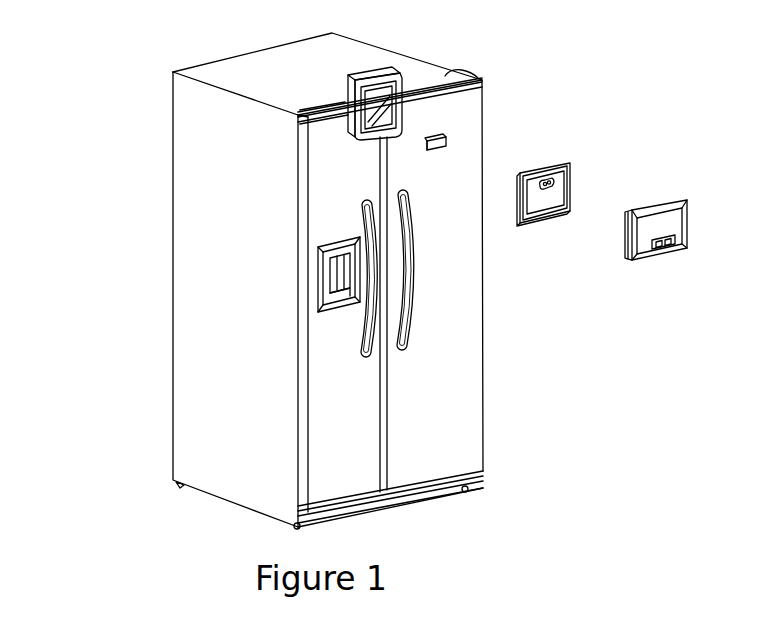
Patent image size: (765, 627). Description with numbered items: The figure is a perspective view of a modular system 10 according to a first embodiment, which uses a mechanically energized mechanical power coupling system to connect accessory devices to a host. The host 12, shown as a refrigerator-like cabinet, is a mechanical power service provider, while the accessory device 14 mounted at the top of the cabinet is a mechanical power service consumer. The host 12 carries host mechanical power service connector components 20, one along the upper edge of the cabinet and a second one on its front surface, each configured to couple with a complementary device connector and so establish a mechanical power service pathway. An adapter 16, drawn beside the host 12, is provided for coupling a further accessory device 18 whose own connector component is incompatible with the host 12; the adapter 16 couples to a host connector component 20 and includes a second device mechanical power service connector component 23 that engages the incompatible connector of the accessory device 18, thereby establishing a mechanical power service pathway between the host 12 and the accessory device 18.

The modular system 10 is at (96, 172).
The host 12 is at (193, 290).
The accessory device 14 is at (372, 70).
The adapter 16 is at (545, 165).
The accessory device 18 is at (628, 240).
The host mechanical power service connector component 20 is at (336, 110).
The second device mechanical power service connector component 23 is at (556, 182).